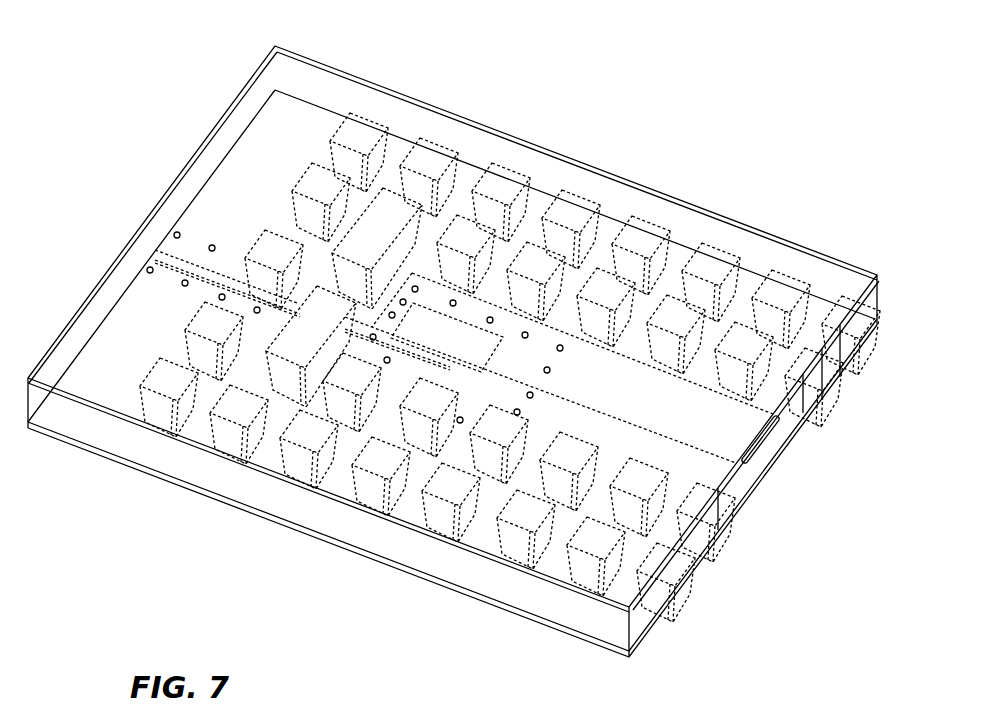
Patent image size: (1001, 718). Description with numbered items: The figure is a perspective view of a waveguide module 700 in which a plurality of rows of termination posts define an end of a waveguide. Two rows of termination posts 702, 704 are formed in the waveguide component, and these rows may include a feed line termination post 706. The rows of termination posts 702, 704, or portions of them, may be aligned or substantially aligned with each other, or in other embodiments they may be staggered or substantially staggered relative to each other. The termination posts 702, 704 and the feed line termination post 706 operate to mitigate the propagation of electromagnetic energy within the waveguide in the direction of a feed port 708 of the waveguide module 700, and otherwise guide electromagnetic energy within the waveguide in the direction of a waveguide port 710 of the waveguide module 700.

The waveguide module 700 is at (577, 124).
The termination posts 702 is at (267, 343).
The termination posts 704 is at (165, 382).
The feed line termination post 706 is at (286, 247).
The feed port 708 is at (153, 250).
The waveguide port 710 is at (738, 491).